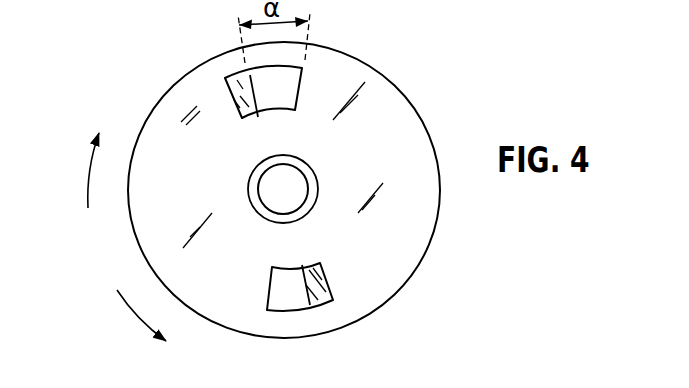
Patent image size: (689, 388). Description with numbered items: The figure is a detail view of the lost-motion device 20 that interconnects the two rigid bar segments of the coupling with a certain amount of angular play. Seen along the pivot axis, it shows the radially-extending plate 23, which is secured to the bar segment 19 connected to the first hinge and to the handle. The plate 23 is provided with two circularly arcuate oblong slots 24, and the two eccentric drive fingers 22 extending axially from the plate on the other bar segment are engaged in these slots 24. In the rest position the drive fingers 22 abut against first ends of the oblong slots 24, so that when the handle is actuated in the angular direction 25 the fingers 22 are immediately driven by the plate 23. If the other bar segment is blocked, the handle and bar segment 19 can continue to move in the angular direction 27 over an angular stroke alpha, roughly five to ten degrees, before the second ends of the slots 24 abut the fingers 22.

The bar segment 19 is at (300, 210).
The lost-motion device 20 is at (402, 76).
The eccentric drive fingers 22 is at (242, 100).
The radially-extending plate 23 is at (153, 220).
The circularly arcuate oblong slots 24 is at (227, 90).
The angular direction 25 is at (91, 160).
The angular direction 27 is at (132, 315).